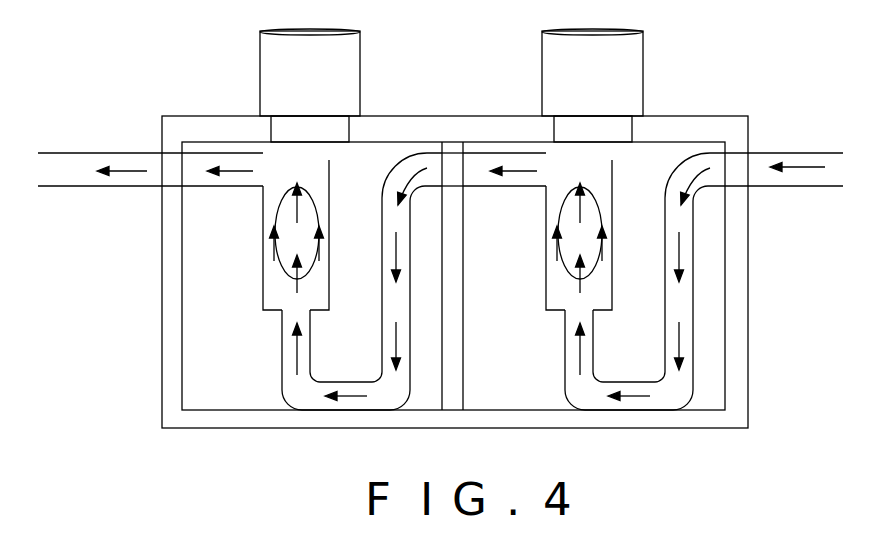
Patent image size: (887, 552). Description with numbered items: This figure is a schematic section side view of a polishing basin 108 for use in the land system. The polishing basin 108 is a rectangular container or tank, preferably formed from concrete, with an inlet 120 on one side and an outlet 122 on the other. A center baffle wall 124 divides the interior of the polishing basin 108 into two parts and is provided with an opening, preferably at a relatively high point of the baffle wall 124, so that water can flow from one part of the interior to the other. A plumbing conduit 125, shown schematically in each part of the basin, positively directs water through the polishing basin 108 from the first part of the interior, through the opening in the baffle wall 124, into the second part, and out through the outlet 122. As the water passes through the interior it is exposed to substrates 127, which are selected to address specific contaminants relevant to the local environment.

The polishing basin 108 is at (723, 100).
The inlet 120 is at (738, 168).
The outlet 122 is at (170, 172).
The center baffle wall 124 is at (455, 373).
The plumbing conduit 125 is at (304, 397).
The substrate 127 is at (308, 205).